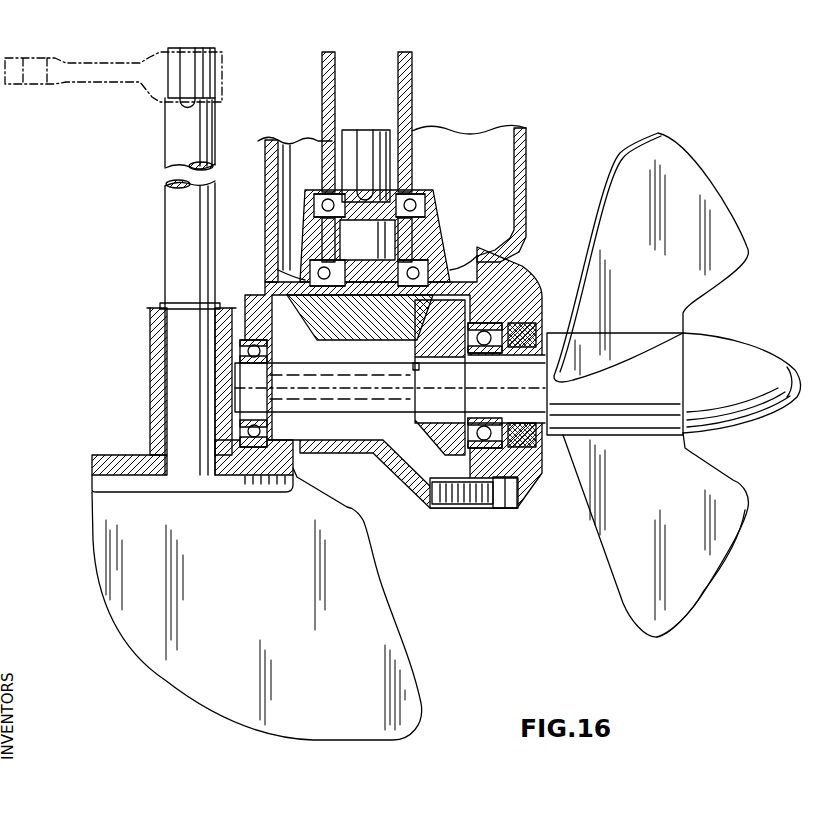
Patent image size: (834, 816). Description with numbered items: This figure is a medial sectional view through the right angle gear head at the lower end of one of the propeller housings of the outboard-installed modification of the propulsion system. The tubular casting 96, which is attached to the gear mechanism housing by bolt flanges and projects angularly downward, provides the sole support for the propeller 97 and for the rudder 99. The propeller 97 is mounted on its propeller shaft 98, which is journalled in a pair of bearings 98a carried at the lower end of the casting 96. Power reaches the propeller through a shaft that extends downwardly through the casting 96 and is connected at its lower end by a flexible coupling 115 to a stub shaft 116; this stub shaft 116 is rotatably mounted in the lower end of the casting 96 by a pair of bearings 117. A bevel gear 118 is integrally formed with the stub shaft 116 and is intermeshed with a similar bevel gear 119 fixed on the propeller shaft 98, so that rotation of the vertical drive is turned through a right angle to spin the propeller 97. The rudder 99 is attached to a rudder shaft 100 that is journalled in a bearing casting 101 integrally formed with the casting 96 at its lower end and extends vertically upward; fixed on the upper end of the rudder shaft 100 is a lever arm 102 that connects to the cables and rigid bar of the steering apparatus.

The tubular casting 96 is at (528, 212).
The propeller 97 is at (735, 566).
The propeller shaft 98 is at (370, 392).
The bearings 98a is at (300, 468).
The rudder 99 is at (393, 636).
The rudder shaft 100 is at (165, 207).
The bearing casting 101 is at (148, 325).
The lever arm 102 is at (97, 84).
The flexible coupling 115 is at (413, 84).
The stub shaft 116 is at (385, 240).
The bearings 117 is at (410, 192).
The bevel gear 118 is at (330, 343).
The bevel gear 119 is at (418, 424).